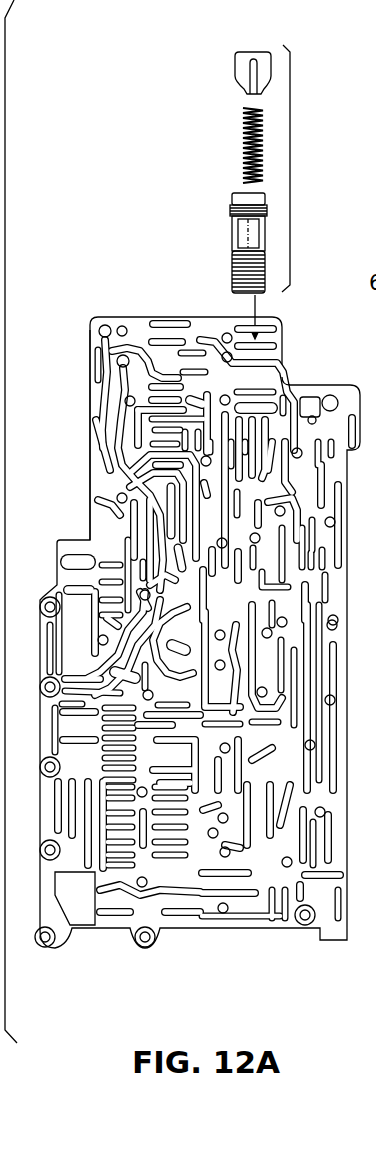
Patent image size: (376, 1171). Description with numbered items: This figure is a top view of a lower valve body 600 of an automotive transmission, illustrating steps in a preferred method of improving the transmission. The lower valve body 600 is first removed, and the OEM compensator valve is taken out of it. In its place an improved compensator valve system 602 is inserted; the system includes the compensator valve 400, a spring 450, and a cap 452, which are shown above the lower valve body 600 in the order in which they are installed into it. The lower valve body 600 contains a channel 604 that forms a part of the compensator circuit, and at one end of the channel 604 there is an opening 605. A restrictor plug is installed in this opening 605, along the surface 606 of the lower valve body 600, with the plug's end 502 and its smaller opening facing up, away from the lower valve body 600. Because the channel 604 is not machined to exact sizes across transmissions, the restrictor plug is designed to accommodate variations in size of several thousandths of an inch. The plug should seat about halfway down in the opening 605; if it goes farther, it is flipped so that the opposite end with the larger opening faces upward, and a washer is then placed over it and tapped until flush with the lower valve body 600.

The compensator valve 400 is at (230, 232).
The spring 450 is at (242, 145).
The cap 452 is at (236, 73).
The end of restrictor plug 502 is at (259, 176).
The lower valve body 600 is at (131, 298).
The improved compensator valve system 602 is at (291, 158).
The channel 604 is at (277, 354).
The opening 605 is at (220, 337).
The surface 606 is at (80, 390).